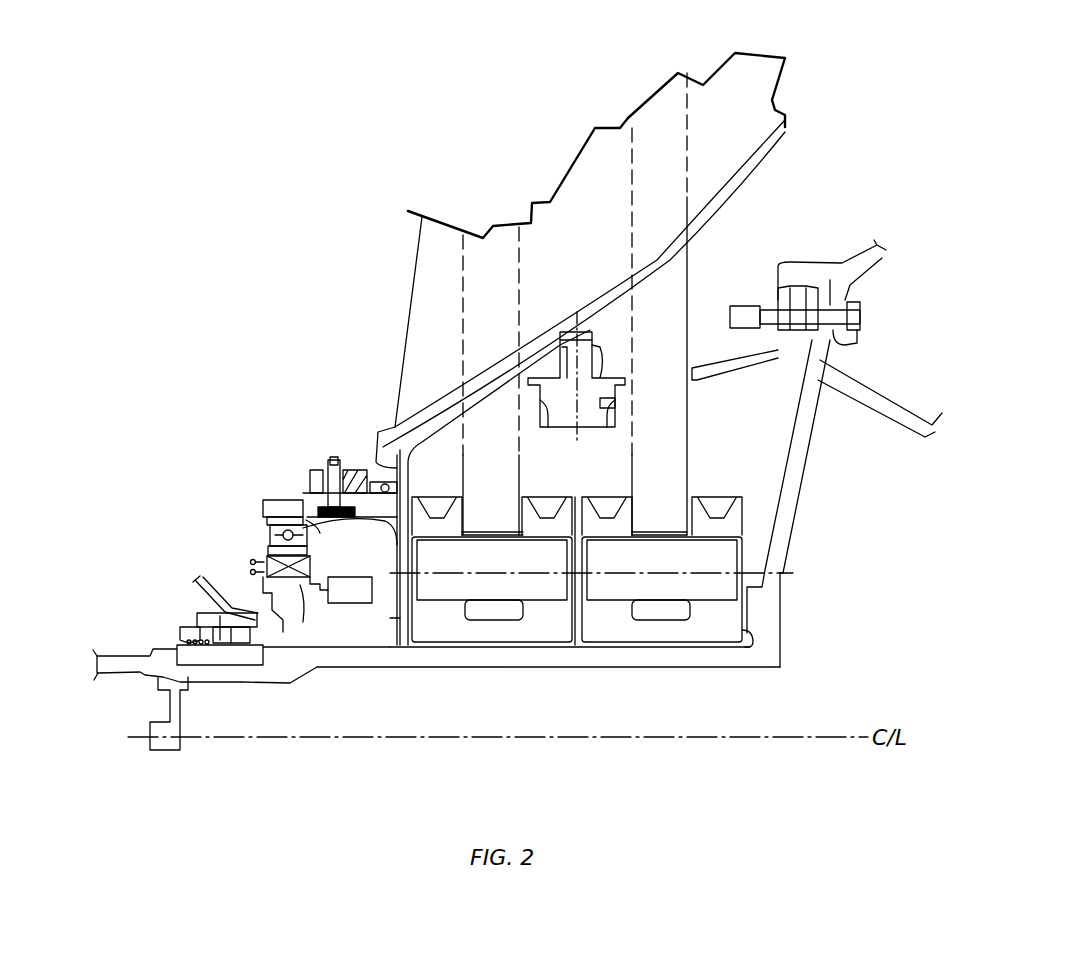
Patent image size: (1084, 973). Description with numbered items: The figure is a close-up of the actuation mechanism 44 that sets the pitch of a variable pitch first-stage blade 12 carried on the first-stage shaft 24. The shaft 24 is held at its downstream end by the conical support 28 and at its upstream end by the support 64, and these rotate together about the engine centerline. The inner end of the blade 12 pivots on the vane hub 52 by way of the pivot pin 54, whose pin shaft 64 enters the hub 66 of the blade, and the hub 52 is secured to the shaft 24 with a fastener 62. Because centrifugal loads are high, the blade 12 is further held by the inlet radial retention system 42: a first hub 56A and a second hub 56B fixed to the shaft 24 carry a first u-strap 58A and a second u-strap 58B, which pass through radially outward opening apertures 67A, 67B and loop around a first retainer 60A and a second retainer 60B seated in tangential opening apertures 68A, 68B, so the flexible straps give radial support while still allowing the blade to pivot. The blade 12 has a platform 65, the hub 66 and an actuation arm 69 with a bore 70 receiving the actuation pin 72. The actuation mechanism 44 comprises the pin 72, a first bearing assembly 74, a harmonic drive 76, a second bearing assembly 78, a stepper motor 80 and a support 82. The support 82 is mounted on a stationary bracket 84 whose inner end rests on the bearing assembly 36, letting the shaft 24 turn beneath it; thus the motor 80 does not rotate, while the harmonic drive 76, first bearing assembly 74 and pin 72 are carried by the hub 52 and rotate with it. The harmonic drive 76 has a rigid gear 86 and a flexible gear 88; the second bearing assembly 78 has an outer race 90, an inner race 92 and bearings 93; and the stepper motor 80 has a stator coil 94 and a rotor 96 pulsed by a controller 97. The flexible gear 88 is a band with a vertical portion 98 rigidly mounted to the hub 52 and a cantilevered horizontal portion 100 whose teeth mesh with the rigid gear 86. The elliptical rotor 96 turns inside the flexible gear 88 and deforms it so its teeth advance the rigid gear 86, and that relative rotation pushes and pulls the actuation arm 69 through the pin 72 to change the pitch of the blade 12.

The first-stage blade 12 is at (600, 158).
The first-stage shaft 24 is at (798, 460).
The conical support 28 is at (875, 382).
The bearing assembly 36 is at (180, 623).
The inlet radial retention system 42 is at (798, 640).
The actuation mechanism 44 is at (233, 465).
The vane hub 52 is at (713, 368).
The pivot pin 54 is at (560, 425).
The first hub 56A is at (550, 513).
The second hub 56B is at (610, 513).
The first u-strap 58A is at (512, 454).
The second u-strap 58B is at (677, 457).
The first retainer 60A is at (515, 569).
The second retainer 60B is at (683, 569).
The fastener 62 is at (612, 403).
The support 64 is at (567, 347).
The platform 65 is at (428, 410).
The hub 66 is at (610, 347).
The radially outward opening aperture 67A is at (512, 419).
The radially outward opening aperture 67B is at (695, 490).
The tangential opening aperture 68A is at (392, 622).
The tangential opening aperture 68B is at (747, 535).
The actuation arm 69 is at (367, 460).
The bore 70 is at (323, 483).
The actuation pin 72 is at (333, 467).
The first bearing assembly 74 is at (390, 457).
The harmonic drive 76 is at (193, 441).
The second bearing assembly 78 is at (320, 528).
The stepper motor 80 is at (247, 565).
The support 82 is at (303, 583).
The bracket 84 is at (210, 602).
The rigid gear 86 is at (263, 508).
The flexible gear 88 is at (272, 532).
The outer race 90 is at (317, 533).
The inner race 92 is at (307, 550).
The bearings 93 is at (270, 537).
The stator coil 94 is at (277, 550).
The rotor 96 is at (277, 533).
The controller 97 is at (364, 602).
The vertical portion 98 is at (390, 618).
The horizontal portion 100 is at (390, 542).